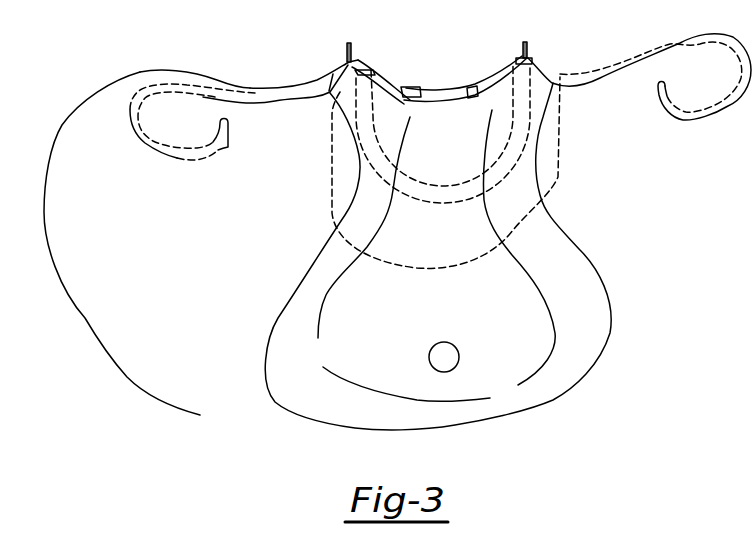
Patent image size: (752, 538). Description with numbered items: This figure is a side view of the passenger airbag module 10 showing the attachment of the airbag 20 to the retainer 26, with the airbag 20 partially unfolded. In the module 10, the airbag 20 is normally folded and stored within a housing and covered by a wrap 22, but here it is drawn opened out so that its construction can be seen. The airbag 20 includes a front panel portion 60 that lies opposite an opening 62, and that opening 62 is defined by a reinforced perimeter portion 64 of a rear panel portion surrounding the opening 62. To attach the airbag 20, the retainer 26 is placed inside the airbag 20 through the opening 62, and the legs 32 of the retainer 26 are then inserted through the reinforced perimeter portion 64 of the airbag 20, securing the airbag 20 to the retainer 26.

The passenger airbag module 10 is at (128, 70).
The airbag 20 is at (622, 347).
The wrap 22 is at (98, 362).
The retainer 26 is at (515, 40).
The legs 32 is at (349, 48).
The front panel portion 60 is at (566, 389).
The opening 62 is at (418, 97).
The reinforced perimeter portion 64 is at (369, 75).